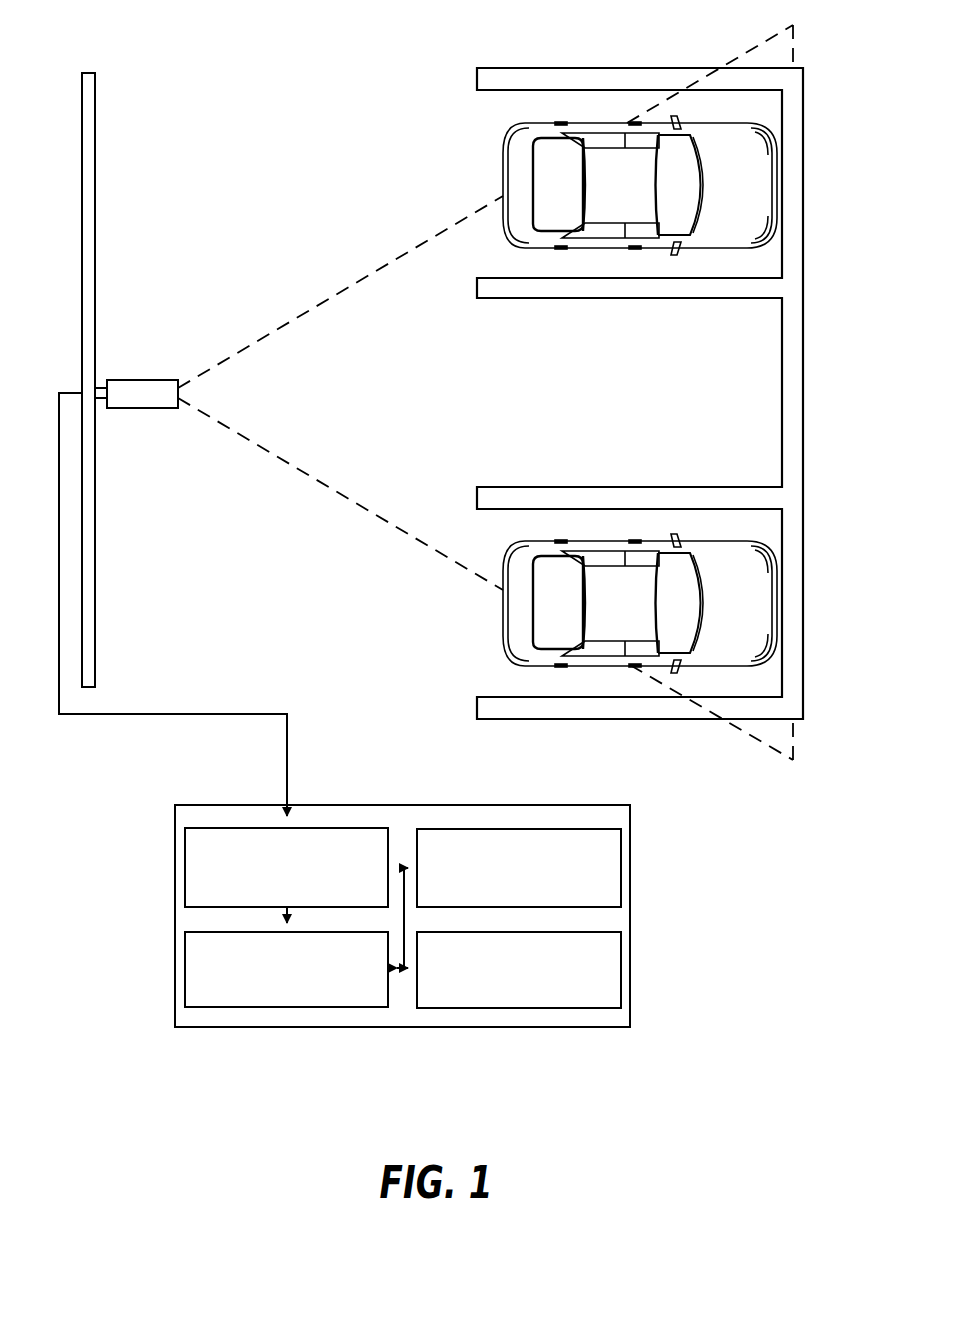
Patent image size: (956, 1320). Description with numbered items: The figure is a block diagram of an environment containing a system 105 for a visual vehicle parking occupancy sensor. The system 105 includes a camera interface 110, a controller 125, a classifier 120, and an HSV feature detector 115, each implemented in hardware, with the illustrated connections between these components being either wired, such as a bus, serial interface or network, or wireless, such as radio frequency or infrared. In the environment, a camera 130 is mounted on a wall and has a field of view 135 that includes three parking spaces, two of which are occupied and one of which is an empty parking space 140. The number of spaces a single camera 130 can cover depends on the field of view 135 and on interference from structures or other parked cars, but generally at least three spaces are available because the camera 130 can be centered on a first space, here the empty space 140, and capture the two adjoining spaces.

The system 105 is at (175, 805).
The camera interface 110 is at (185, 865).
The HSV feature detector 115 is at (621, 967).
The classifier 120 is at (621, 866).
The controller 125 is at (185, 968).
The camera 130 is at (140, 380).
The field of view 135 is at (318, 302).
The empty parking space 140 is at (555, 362).